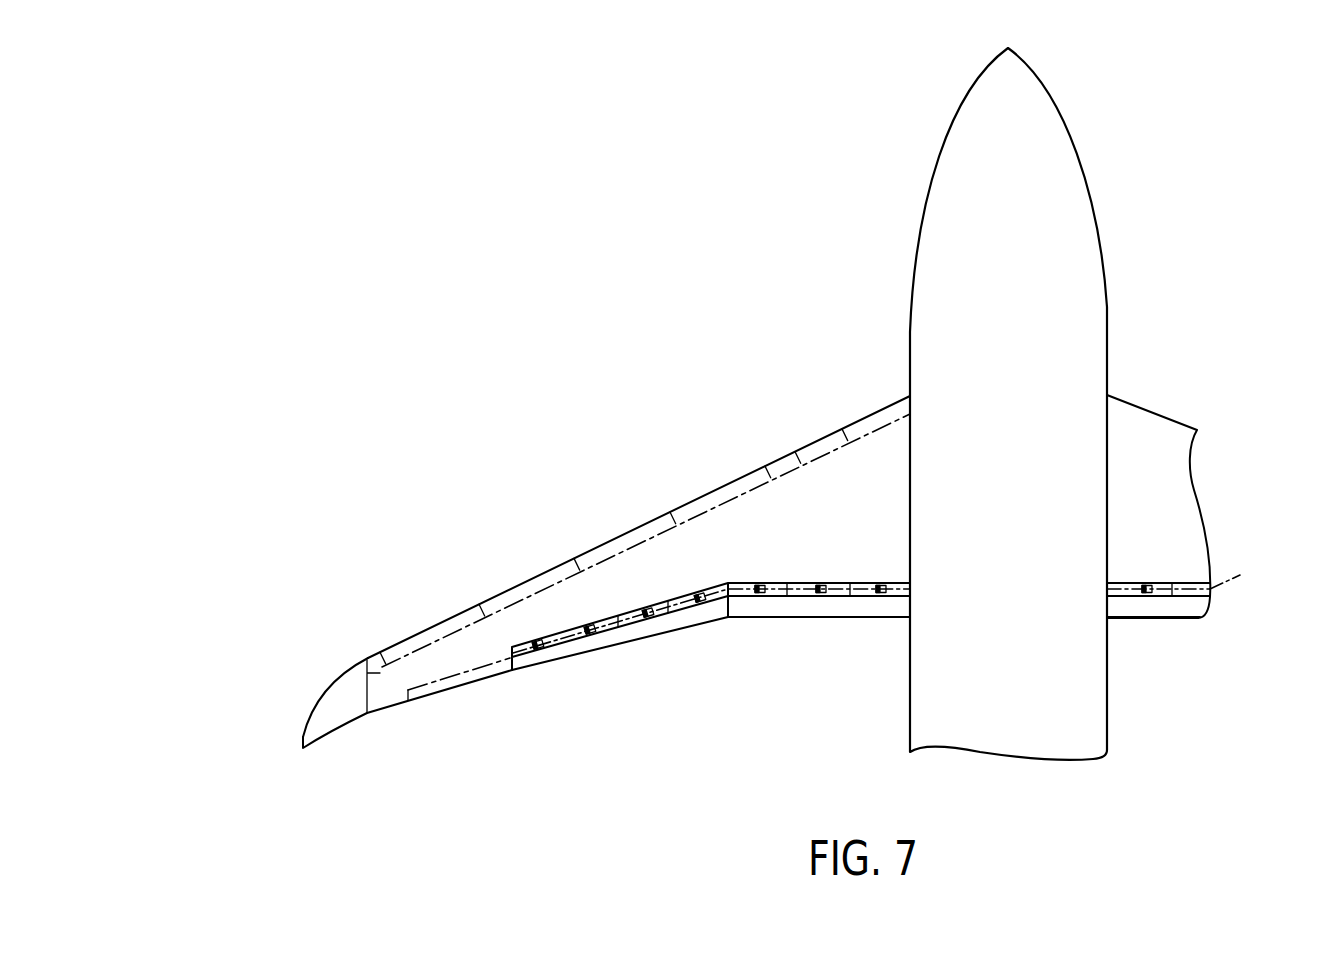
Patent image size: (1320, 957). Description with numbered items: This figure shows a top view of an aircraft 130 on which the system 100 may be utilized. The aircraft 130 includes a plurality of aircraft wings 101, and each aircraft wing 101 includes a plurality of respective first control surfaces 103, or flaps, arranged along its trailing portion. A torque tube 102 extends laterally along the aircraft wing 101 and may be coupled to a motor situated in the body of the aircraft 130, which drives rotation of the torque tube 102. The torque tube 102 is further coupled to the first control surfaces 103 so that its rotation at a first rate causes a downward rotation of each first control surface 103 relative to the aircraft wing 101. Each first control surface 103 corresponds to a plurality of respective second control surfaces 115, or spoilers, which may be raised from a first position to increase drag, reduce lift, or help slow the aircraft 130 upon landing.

The system 100 is at (538, 648).
The aircraft wing 101 is at (673, 508).
The torque tube 102 is at (610, 615).
The first control surface 103 is at (610, 642).
The second control surface 115 is at (518, 645).
The aircraft 130 is at (882, 209).